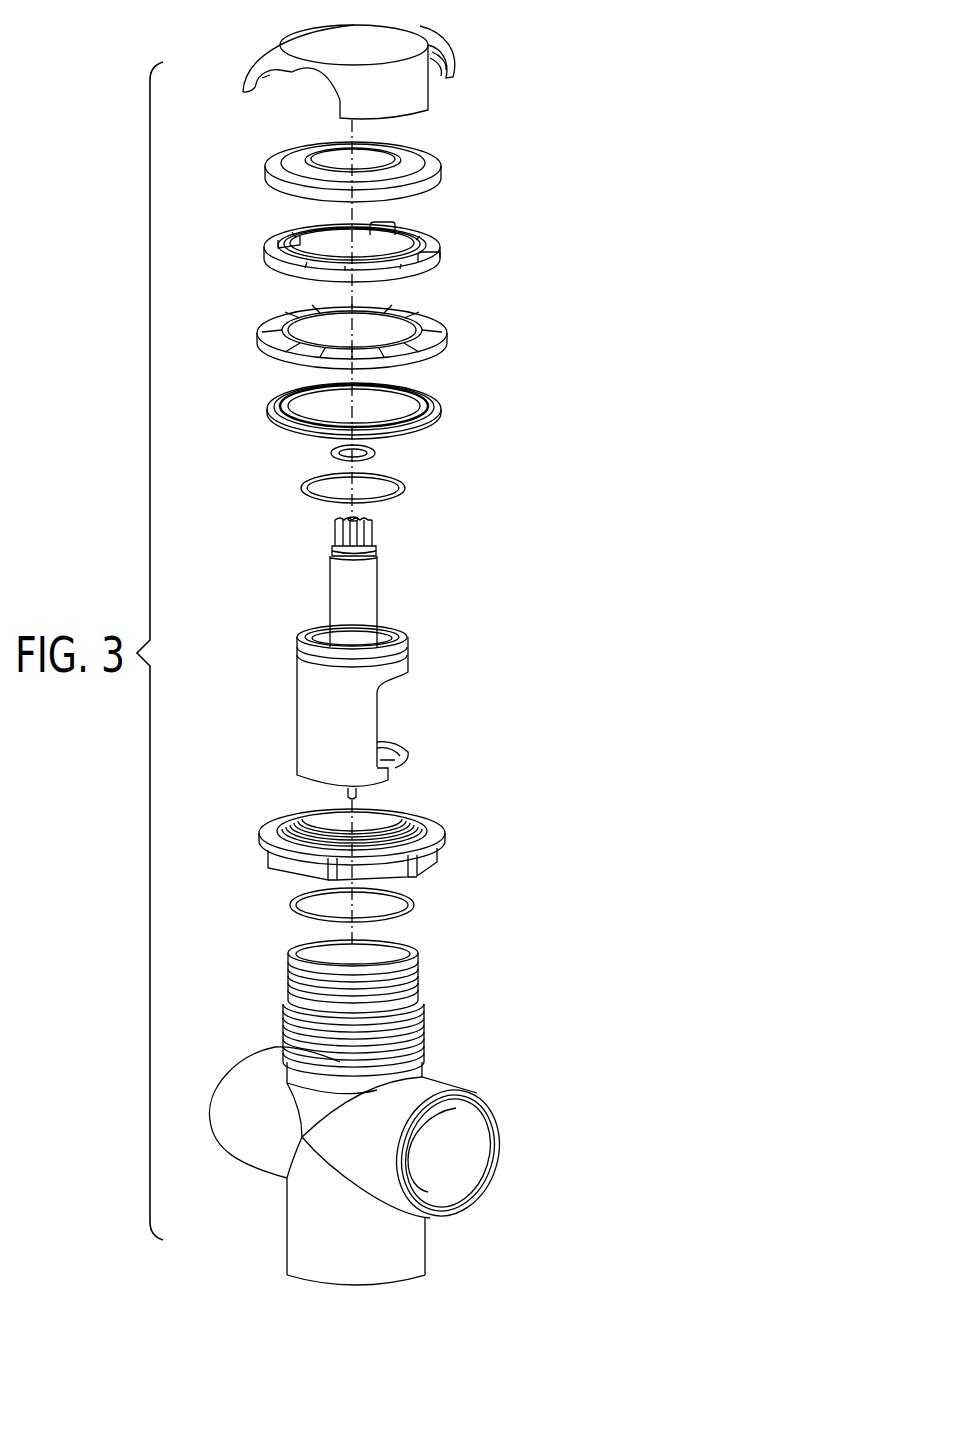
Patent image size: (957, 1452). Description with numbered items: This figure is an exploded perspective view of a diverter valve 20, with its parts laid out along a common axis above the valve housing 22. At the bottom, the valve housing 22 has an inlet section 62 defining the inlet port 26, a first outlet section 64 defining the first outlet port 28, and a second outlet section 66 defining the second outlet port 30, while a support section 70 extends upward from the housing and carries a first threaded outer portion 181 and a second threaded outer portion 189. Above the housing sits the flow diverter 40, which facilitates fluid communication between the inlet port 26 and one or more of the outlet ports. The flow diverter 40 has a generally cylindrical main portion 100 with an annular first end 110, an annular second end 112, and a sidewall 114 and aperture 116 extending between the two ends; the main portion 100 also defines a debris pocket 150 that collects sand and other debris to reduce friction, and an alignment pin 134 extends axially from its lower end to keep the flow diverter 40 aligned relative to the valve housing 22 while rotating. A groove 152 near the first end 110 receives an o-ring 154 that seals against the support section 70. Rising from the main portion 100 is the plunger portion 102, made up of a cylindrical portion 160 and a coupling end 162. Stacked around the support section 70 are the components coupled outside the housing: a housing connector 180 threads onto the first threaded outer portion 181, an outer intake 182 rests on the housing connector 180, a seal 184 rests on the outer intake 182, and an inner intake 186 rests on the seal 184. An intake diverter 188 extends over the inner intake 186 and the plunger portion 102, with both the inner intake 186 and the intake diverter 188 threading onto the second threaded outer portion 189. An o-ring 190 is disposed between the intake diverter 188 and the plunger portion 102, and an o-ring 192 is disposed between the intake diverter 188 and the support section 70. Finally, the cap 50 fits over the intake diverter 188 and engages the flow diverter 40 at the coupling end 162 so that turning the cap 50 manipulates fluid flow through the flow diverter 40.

The diverter valve 20 is at (607, 188).
The cap 50 is at (370, 38).
The intake diverter 188 is at (440, 165).
The inner intake 186 is at (440, 240).
The outer intake 182 is at (452, 325).
The seal 184 is at (438, 397).
The o-ring 190 is at (378, 454).
The o-ring 154 is at (402, 490).
The coupling end 162 is at (334, 528).
The cylindrical portion 160 is at (343, 590).
The plunger portion 102 is at (388, 577).
The debris pocket 150 is at (340, 640).
The groove 152 is at (300, 643).
The first end 110 is at (408, 656).
The flow diverter 40 is at (390, 668).
The aperture 116 is at (437, 716).
The sidewall 114 is at (312, 705).
The main portion 100 is at (310, 749).
The second end 112 is at (408, 758).
The alignment pin 134 is at (360, 793).
The housing connector 180 is at (440, 830).
The o-ring 192 is at (412, 897).
The support section 70 is at (278, 986).
The second threaded outer portion 189 is at (420, 975).
The first threaded outer portion 181 is at (428, 1023).
The second outlet port 30 is at (200, 1060).
The inlet section 62 is at (310, 1250).
The valve housing 22 is at (400, 1250).
The inlet port 26 is at (338, 1306).
The second outlet section 66 is at (232, 1138).
The first outlet section 64 is at (470, 1092).
The first outlet port 28 is at (473, 1167).